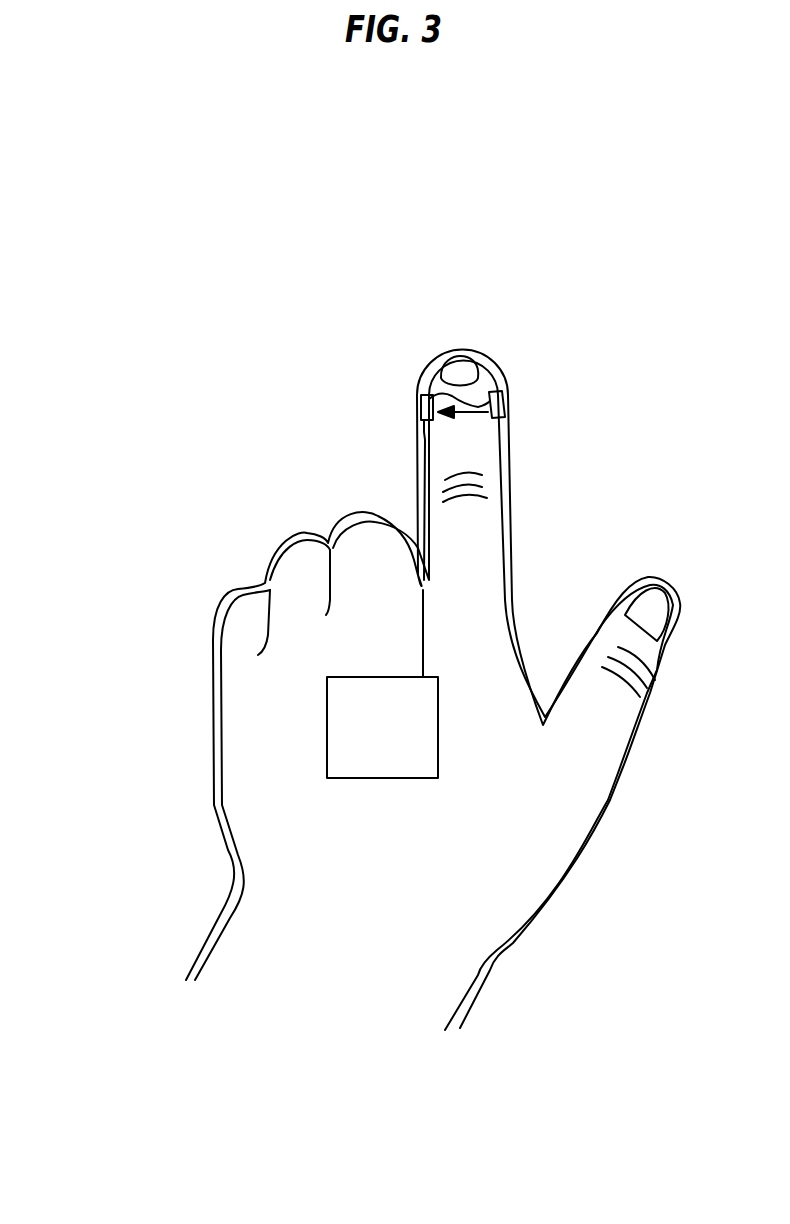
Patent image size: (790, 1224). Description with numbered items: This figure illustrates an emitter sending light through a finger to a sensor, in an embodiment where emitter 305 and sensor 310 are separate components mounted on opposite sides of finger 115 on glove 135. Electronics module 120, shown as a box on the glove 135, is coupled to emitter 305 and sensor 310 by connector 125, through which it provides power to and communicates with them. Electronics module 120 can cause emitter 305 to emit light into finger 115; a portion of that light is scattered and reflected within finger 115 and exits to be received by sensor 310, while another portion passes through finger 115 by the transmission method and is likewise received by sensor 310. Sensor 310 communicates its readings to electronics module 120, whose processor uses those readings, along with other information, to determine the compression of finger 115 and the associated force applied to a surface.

The glove 135 is at (238, 590).
The finger 115 is at (509, 506).
The sensor 310 is at (419, 403).
The emitter 305 is at (506, 397).
The connector 125 is at (420, 447).
The electronics module 120 is at (327, 722).